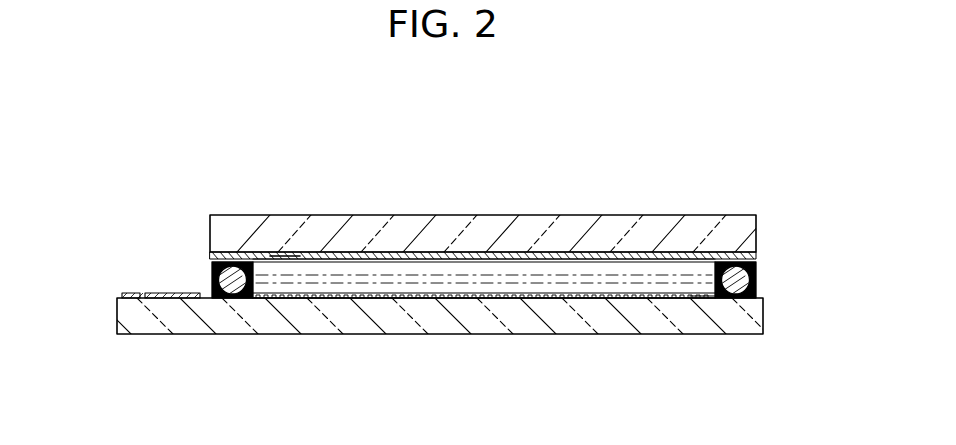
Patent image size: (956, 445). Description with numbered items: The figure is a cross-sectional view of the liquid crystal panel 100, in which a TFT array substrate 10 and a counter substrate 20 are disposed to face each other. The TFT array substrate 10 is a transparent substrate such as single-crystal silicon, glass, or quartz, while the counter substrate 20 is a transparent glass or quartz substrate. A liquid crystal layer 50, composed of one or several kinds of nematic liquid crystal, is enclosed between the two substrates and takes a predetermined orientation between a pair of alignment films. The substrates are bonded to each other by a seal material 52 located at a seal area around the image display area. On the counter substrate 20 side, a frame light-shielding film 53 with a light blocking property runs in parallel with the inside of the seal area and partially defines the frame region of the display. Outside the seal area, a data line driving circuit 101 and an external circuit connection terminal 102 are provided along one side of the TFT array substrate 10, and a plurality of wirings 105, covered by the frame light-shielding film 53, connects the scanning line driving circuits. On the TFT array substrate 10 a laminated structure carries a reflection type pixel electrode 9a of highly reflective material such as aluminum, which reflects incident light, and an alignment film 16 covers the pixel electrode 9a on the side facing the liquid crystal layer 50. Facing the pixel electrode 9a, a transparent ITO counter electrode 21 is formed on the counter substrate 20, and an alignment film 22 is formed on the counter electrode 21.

The liquid crystal panel 100 is at (725, 106).
The TFT array substrate 10 is at (540, 333).
The pixel electrode 9a is at (321, 300).
The counter substrate 20 is at (462, 226).
The counter electrode 21 is at (636, 256).
The alignment film 22 is at (579, 258).
The liquid crystal layer 50 is at (482, 285).
The alignment film 16 is at (645, 293).
The seal material 52 is at (212, 275).
The frame light-shielding film 53 is at (285, 259).
The data line driving circuit 101 is at (168, 294).
The external circuit connection terminal 102 is at (134, 294).
The wirings 105 is at (701, 299).